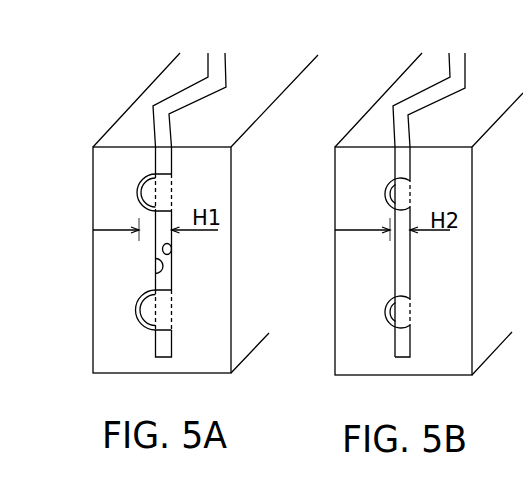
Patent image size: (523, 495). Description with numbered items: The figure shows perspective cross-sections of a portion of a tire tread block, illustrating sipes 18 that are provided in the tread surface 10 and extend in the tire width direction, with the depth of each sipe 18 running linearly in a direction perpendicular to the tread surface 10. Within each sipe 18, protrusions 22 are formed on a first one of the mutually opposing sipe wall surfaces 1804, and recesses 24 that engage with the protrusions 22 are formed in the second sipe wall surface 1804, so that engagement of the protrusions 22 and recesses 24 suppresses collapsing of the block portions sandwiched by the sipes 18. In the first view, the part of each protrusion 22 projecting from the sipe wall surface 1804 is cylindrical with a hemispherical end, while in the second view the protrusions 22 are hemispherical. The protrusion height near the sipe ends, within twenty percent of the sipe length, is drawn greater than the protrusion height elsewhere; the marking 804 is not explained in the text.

In FIG. 5A, the tread surface 10 is at (247, 93).
In FIG. 5B, the tread surface 10 is at (429, 214).
In FIG. 5A, the sipe 18 is at (187, 93).
In FIG. 5B, the sipe 18 is at (429, 205).
In FIG. 5A, the protrusion 22 is at (165, 193).
In FIG. 5B, the protrusion 22 is at (405, 191).
In FIG. 5A, the recess 24 is at (137, 192).
In FIG. 5B, the recess 24 is at (387, 191).
In FIG. 5A, the projection 804 is at (156, 272).
In FIG. 5A, the sipe wall surface 1804 is at (172, 253).